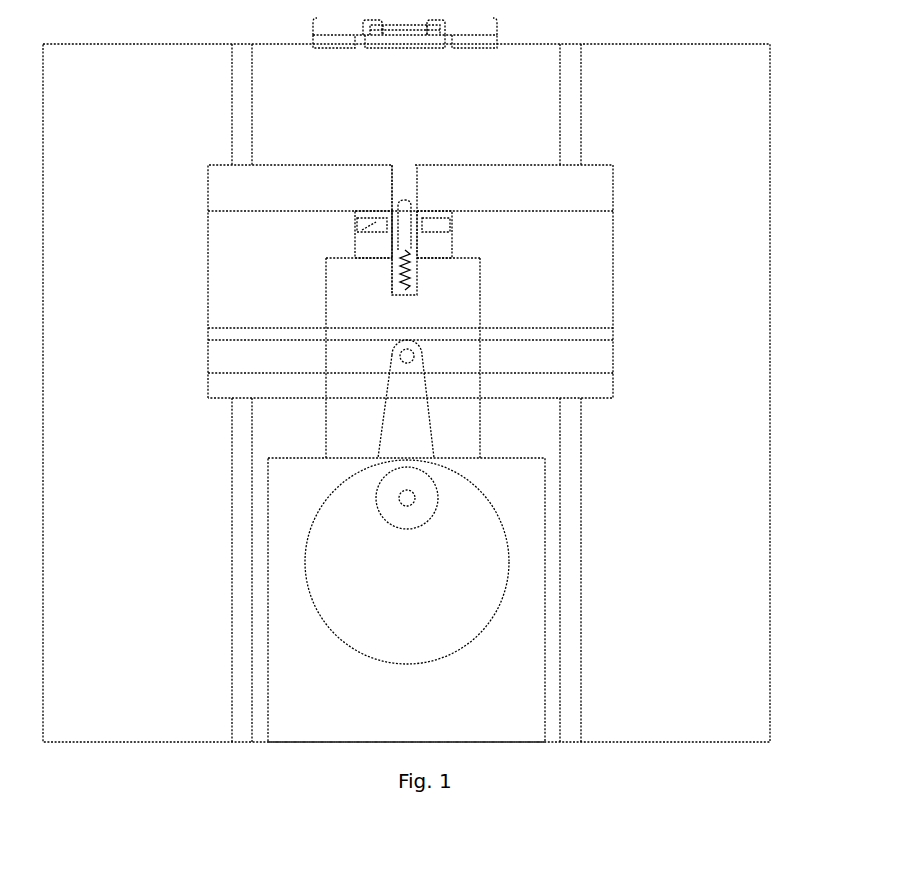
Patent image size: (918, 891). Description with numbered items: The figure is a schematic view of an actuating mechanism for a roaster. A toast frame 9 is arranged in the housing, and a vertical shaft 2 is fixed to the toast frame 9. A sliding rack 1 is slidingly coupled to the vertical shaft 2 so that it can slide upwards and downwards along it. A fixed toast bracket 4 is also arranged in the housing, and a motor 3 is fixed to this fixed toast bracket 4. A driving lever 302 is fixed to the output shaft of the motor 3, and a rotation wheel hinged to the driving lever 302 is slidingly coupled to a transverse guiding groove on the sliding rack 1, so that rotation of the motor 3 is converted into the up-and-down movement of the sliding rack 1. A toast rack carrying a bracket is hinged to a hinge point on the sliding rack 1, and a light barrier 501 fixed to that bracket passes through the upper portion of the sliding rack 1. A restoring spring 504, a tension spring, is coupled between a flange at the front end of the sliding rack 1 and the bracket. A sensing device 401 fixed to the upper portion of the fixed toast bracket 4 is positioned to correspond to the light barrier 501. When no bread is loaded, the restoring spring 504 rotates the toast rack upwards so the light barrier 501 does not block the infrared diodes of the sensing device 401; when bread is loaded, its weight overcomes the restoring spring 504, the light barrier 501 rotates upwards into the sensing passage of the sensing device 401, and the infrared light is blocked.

The toast frame 9 is at (712, 217).
The sliding rack 1 is at (545, 312).
The vertical shaft 2 is at (568, 470).
The motor 3 is at (467, 535).
The driving lever 302 is at (417, 388).
The fixed toast bracket 4 is at (437, 308).
The sensing device 401 is at (357, 232).
The light barrier 501 is at (405, 208).
The restoring spring 504 is at (398, 276).